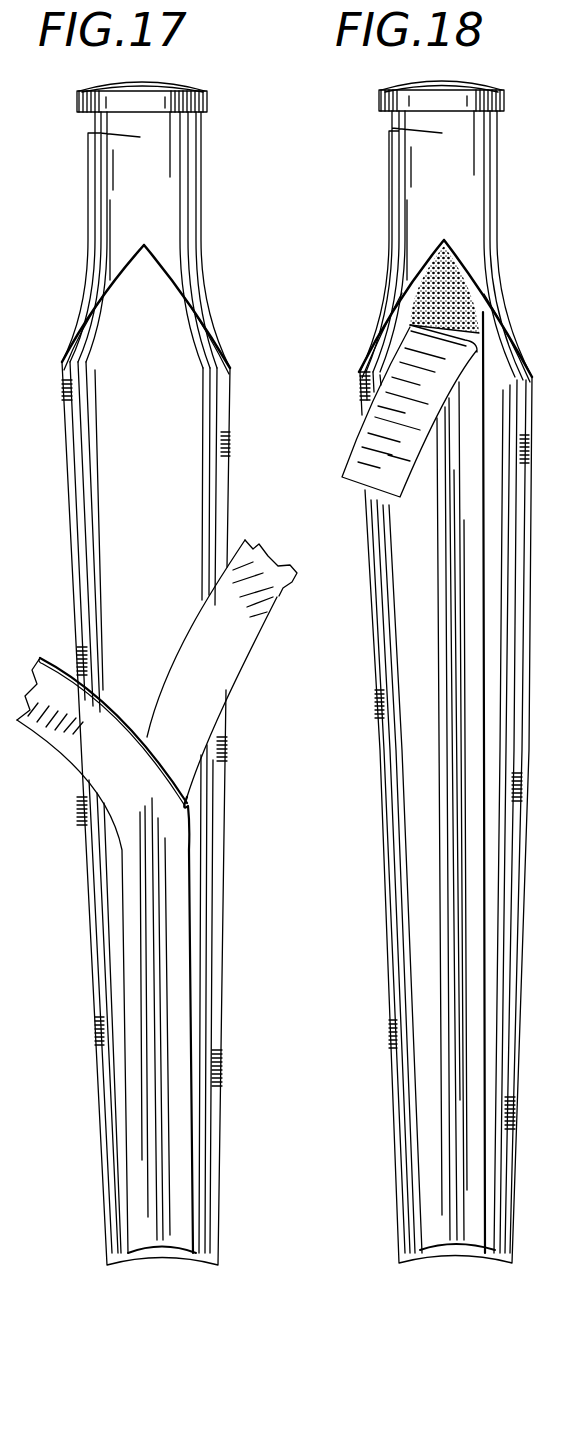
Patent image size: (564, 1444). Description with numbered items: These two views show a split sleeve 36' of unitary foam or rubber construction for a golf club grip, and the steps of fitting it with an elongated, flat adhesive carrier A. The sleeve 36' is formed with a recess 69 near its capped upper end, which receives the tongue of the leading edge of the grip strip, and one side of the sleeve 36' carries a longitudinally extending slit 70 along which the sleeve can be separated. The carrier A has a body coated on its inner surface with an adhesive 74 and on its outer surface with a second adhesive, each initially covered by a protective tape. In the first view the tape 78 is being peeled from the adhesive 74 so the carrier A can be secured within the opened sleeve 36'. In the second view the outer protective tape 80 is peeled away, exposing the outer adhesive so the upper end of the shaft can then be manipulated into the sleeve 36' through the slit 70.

In FIG. 17, the recess 69 is at (96, 122).
In FIG. 18, the recess 69 is at (394, 121).
In FIG. 17, the split sleeve 36' is at (137, 688).
In FIG. 18, the split sleeve 36' is at (454, 687).
In FIG. 18, the longitudinally extending slit 70 is at (468, 278).
In FIG. 18, the adhesive 74 is at (461, 314).
In FIG. 17, the protective tape 78 is at (279, 597).
In FIG. 18, the protective tape 80 is at (362, 448).
In FIG. 17, the adhesive carrier A is at (135, 920).
In FIG. 18, the adhesive carrier A is at (472, 577).